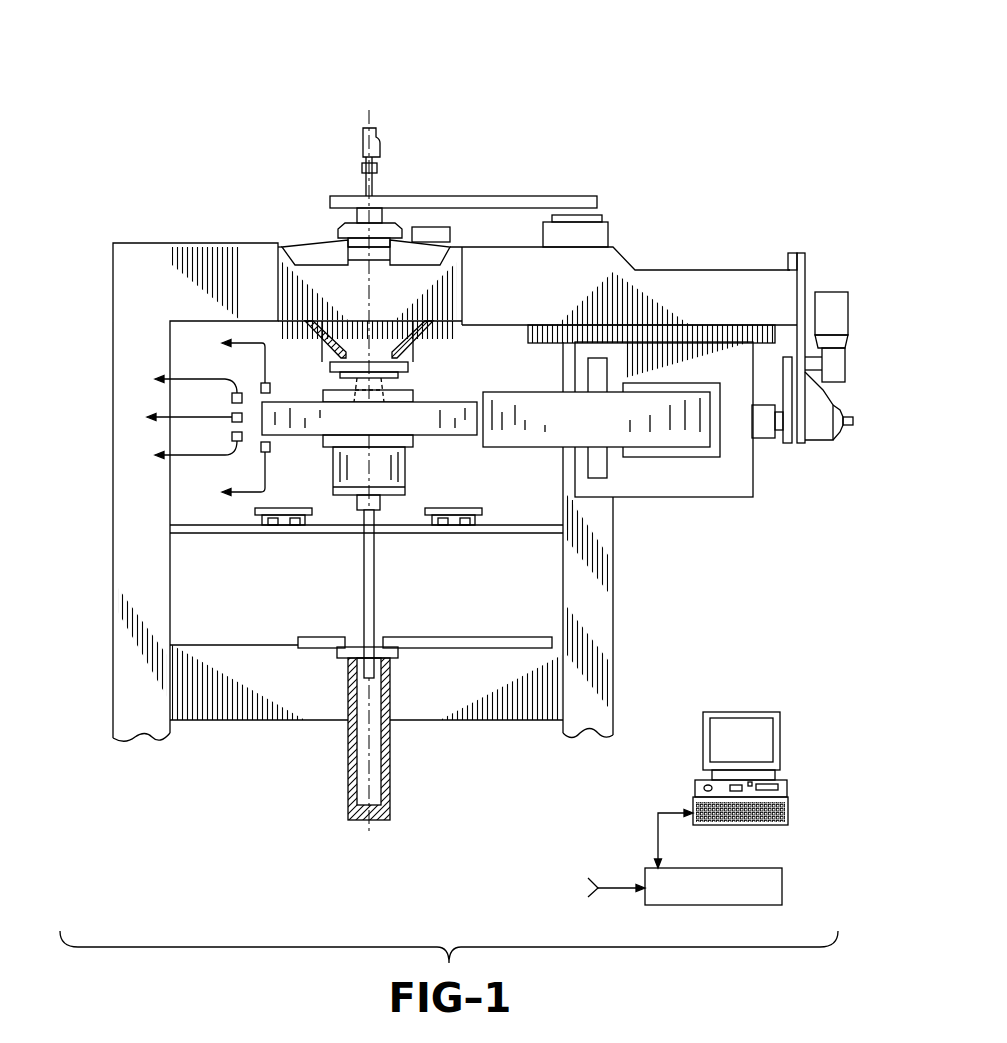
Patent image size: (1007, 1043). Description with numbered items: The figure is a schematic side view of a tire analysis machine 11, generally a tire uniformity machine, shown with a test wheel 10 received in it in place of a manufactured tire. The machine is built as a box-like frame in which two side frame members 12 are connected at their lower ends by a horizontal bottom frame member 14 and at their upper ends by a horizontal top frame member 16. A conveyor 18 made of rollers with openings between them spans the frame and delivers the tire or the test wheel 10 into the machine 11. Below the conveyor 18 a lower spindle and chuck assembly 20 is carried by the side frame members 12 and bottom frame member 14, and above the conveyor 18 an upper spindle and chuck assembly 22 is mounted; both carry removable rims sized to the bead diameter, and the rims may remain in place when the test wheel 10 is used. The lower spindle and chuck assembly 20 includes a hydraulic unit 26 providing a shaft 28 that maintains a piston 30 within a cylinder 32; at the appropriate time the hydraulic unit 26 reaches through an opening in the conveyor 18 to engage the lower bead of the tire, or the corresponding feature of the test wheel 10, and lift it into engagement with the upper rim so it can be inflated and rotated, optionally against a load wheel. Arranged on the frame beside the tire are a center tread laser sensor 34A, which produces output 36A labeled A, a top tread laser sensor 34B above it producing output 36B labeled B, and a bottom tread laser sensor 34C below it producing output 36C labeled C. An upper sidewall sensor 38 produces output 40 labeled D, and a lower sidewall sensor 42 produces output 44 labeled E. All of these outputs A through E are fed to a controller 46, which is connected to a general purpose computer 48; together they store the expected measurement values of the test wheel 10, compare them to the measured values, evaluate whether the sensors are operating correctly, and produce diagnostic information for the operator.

The test wheel 10 is at (433, 452).
The analysis machine 11 is at (638, 102).
The side frame members 12 is at (150, 575).
The horizontal bottom frame member 14 is at (232, 708).
The horizontal top frame member 16 is at (213, 257).
The conveyor 18 is at (283, 533).
The lower spindle and chuck assembly 20 is at (336, 508).
The upper spindle and chuck assembly 22 is at (432, 340).
The hydraulic unit 26 is at (384, 626).
The shaft 28 is at (375, 575).
The piston 30 is at (395, 653).
The cylinder 32 is at (383, 750).
The center tread laser sensor 34A is at (231, 417).
The top tread laser sensor 34B is at (237, 393).
The bottom tread laser sensor 34C is at (237, 441).
The output A 36A is at (197, 419).
The output B 36B is at (197, 378).
The output C 36C is at (197, 455).
The upper sidewall sensor 38 is at (272, 388).
The output D 40 is at (231, 342).
The lower sidewall sensor 42 is at (270, 447).
The output E 44 is at (245, 500).
The controller 46 is at (743, 867).
The general purpose computer 48 is at (788, 808).